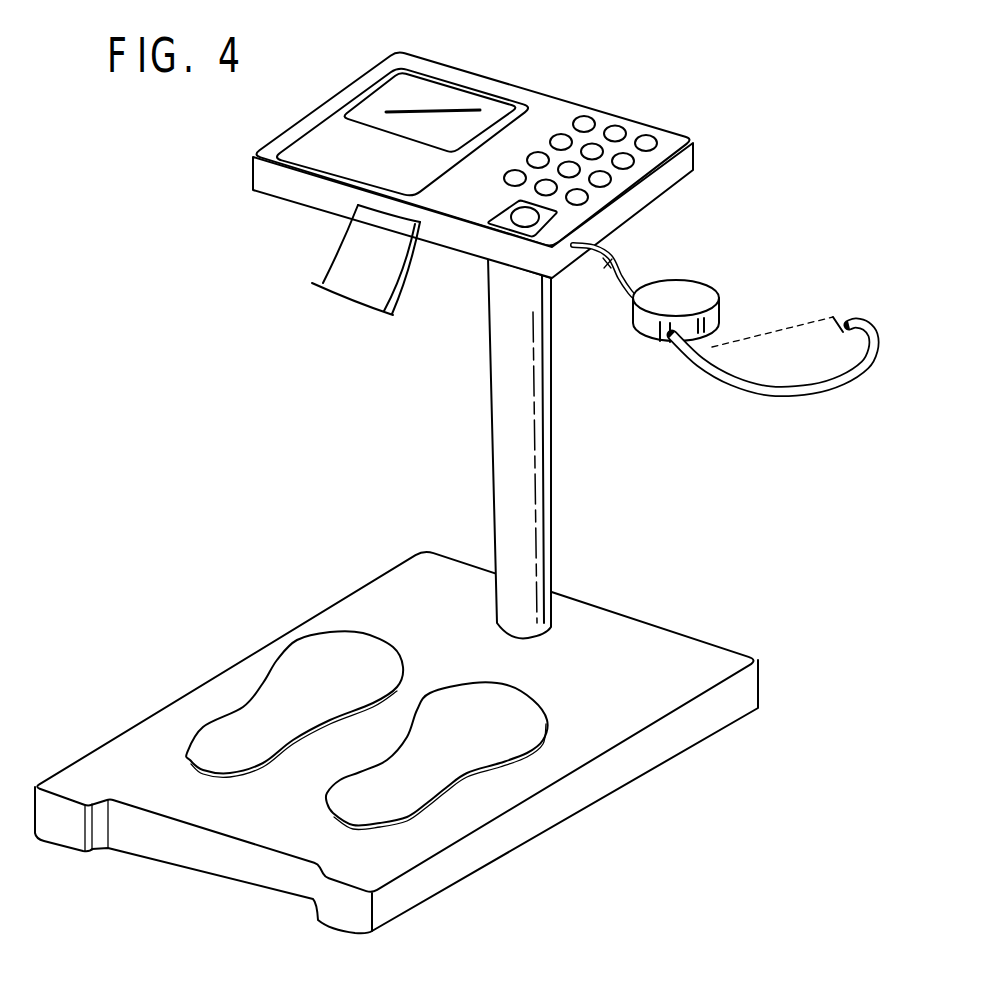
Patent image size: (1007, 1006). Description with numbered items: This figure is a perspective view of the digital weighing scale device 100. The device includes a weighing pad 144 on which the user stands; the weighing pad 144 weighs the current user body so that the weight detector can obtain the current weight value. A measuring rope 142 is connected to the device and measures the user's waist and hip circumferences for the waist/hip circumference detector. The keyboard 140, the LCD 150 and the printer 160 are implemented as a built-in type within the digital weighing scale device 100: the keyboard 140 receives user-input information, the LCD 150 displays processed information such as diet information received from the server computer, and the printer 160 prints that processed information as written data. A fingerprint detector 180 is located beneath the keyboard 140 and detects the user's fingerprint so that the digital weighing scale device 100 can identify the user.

The digital weighing scale device 100 is at (762, 118).
The keyboard 140 is at (613, 126).
The measuring rope 142 is at (688, 295).
The weighing pad 144 is at (510, 735).
The liquid crystal display (LCD) 150 is at (432, 92).
The printer 160 is at (352, 210).
The fingerprint detector 180 is at (517, 216).